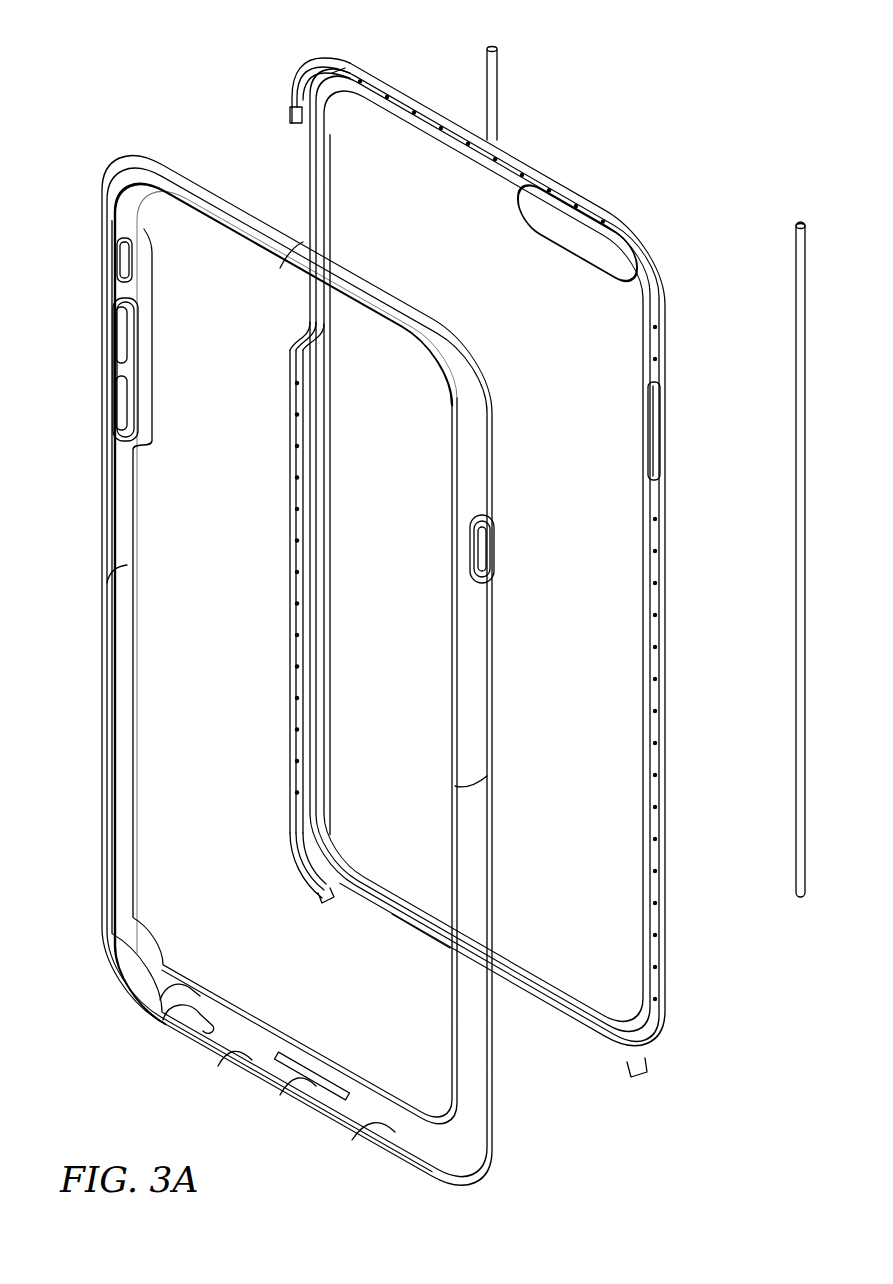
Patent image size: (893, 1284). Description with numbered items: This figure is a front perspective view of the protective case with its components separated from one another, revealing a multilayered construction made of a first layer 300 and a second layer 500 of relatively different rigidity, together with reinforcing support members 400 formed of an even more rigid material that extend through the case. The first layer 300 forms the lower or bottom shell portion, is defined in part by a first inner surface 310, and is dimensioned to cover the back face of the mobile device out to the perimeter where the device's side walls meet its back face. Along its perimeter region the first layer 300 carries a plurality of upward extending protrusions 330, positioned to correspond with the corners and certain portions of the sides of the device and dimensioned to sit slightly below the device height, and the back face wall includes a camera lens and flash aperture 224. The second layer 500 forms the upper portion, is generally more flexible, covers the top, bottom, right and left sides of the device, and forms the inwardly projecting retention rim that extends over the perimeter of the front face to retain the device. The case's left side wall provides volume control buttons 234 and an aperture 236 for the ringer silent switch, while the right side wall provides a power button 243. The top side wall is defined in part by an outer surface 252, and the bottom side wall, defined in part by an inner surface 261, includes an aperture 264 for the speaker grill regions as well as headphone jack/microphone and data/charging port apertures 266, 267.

The camera lens and flash aperture 224 is at (562, 222).
The volume control buttons 234 is at (118, 400).
The ringer silent switch aperture 236 is at (127, 268).
The power button 243 is at (497, 550).
The outer surface of top side wall 252 is at (183, 190).
The inner surface of bottom side wall 261 is at (233, 1048).
The speaker grill aperture 264 is at (397, 1140).
The headphone jack/microphone aperture 266 is at (186, 1021).
The data/charging port aperture 267 is at (312, 1090).
The first layer 300 is at (585, 710).
The first inner surface 310 is at (616, 304).
The upward extending protrusions 330 is at (318, 62).
The reinforcing support member 400 is at (500, 64).
The second layer 500 is at (473, 1104).